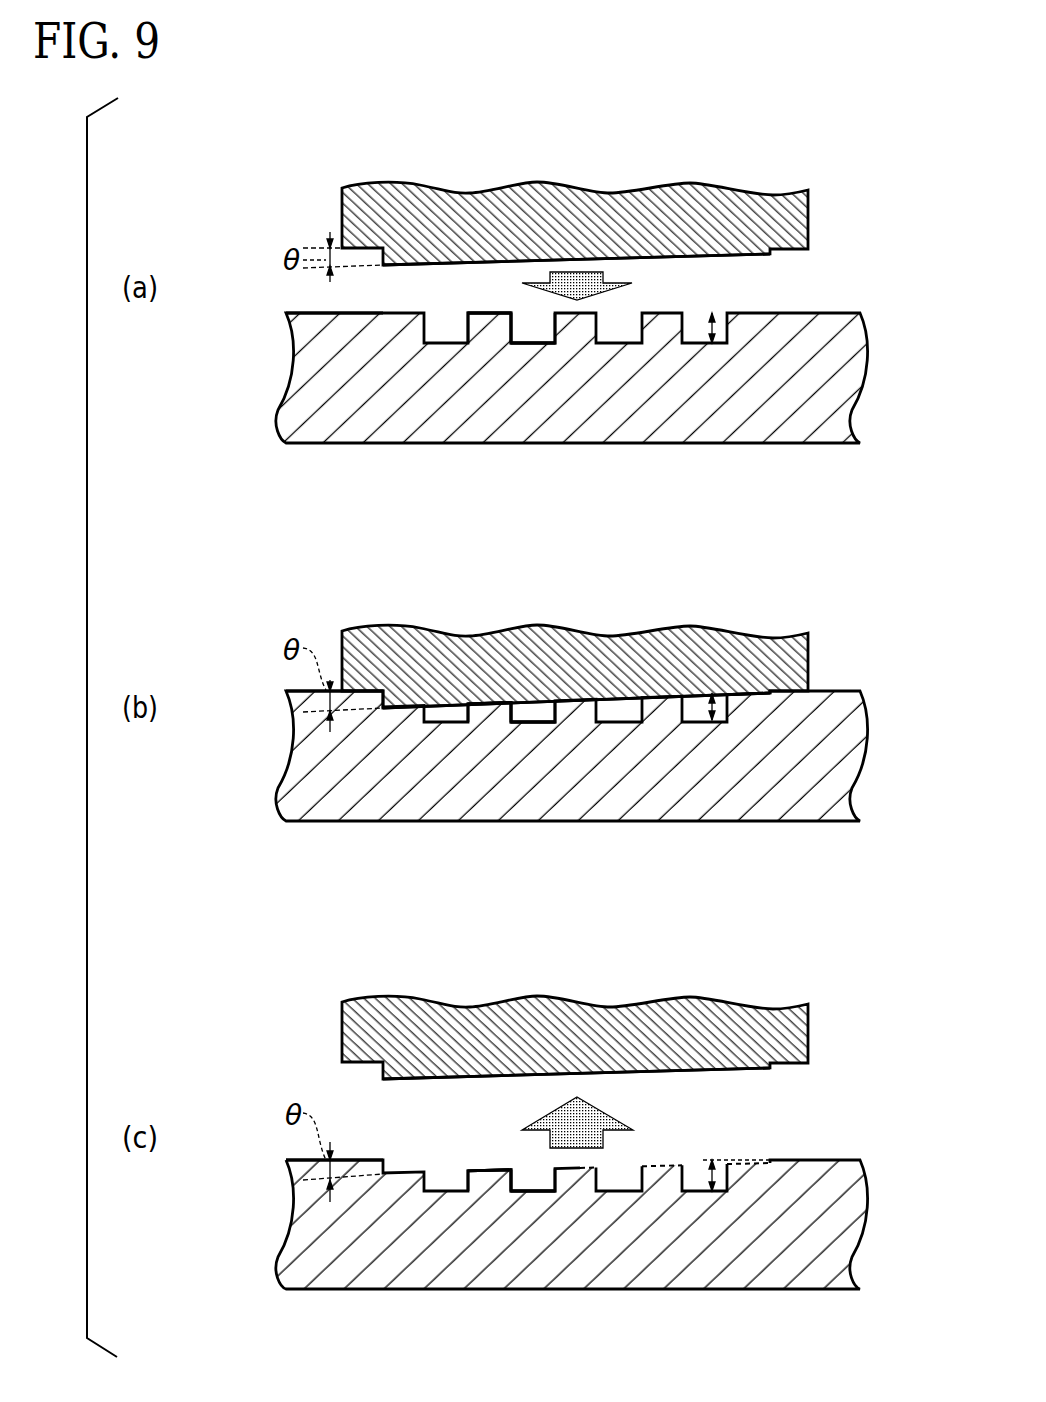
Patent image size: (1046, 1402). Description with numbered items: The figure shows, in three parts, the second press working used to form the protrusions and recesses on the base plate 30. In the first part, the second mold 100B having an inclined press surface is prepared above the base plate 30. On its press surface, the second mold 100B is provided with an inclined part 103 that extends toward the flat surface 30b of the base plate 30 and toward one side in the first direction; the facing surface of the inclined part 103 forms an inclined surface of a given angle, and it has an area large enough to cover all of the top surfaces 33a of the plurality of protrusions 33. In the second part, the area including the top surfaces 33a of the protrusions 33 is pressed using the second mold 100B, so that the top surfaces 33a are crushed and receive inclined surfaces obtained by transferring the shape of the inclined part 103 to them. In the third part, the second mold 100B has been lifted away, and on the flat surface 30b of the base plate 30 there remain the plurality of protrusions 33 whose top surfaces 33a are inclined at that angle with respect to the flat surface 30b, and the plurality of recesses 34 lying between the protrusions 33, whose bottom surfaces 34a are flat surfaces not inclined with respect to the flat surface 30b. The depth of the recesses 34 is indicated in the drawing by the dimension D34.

The second mold 100B is at (342, 218).
The inclined part 103 is at (654, 258).
The base plate 30 is at (612, 445).
The flat surface 30b is at (318, 312).
The protrusion 33 is at (500, 318).
The top surface 33a is at (470, 841).
The recess 34 is at (540, 343).
The bottom surface 34a is at (538, 856).
The depth of groove D34 is at (727, 335).